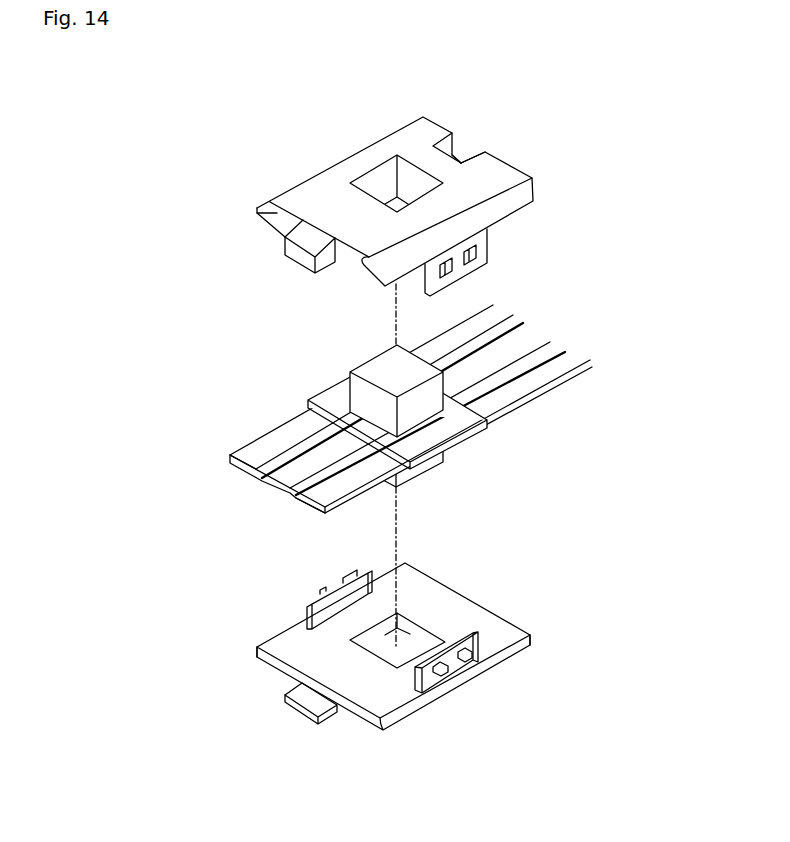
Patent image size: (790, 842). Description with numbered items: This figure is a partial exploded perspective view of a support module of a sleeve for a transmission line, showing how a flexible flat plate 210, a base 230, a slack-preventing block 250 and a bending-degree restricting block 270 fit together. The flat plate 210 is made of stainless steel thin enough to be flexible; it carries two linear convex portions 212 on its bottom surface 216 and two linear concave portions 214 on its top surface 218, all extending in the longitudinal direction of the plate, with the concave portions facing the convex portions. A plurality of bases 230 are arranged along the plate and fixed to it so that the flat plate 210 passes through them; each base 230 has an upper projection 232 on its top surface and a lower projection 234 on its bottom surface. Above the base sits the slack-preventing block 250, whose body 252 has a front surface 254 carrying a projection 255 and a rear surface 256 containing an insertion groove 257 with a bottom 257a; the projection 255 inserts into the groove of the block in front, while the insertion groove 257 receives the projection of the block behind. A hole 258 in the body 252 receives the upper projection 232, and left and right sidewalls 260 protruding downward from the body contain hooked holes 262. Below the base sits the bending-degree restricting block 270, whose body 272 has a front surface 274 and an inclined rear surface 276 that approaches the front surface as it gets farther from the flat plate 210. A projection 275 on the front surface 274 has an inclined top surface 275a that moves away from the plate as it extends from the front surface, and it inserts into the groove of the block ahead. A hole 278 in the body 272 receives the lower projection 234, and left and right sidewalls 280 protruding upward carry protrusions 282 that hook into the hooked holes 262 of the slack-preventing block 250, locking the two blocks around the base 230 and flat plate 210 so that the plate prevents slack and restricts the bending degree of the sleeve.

The slack-preventing block 250 is at (181, 183).
The body 252 is at (517, 190).
The front surface 254 is at (258, 212).
The projection 255 is at (300, 258).
The rear surface 256 is at (437, 124).
The insertion groove 257 is at (466, 158).
The bottom 257a is at (463, 156).
The hole 258 is at (378, 187).
The left and right sidewalls 260 is at (488, 244).
The hooked holes 262 is at (471, 258).
The flat plate 210 is at (550, 362).
The linear convex portions 212 is at (267, 466).
The linear concave portions 214 is at (268, 463).
The bottom surface 216 is at (288, 490).
The top surface 218 is at (292, 503).
The base 230 is at (480, 428).
The upper projection 232 is at (377, 368).
The lower projection 234 is at (428, 470).
The bending-degree restricting block 270 is at (182, 609).
The body 272 is at (507, 632).
The front surface 274 is at (258, 652).
The projection 275 is at (333, 713).
The top surface 275a is at (300, 700).
The rear surface 276 is at (530, 642).
The hole 278 is at (410, 650).
The left and right sidewalls 280 is at (304, 612).
The protrusions 282 is at (314, 584).